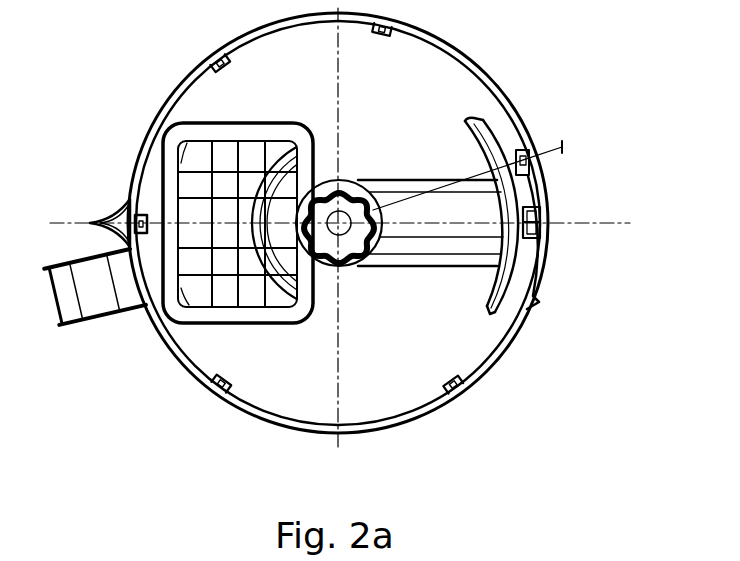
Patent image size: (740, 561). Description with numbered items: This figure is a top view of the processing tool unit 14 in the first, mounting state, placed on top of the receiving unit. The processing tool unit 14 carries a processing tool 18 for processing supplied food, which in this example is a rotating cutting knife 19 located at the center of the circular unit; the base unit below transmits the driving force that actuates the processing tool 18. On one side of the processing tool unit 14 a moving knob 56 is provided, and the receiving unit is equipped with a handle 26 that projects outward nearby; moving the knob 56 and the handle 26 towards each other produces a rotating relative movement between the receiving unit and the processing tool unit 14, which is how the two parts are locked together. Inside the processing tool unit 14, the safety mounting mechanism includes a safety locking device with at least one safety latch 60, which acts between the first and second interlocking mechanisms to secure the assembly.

The processing tool unit 14 is at (502, 63).
The processing tool 18 is at (252, 166).
The rotating cutting knife 19 is at (428, 264).
The handle 26 is at (102, 328).
The moving knob 56 is at (108, 212).
The safety latch 60 is at (535, 174).